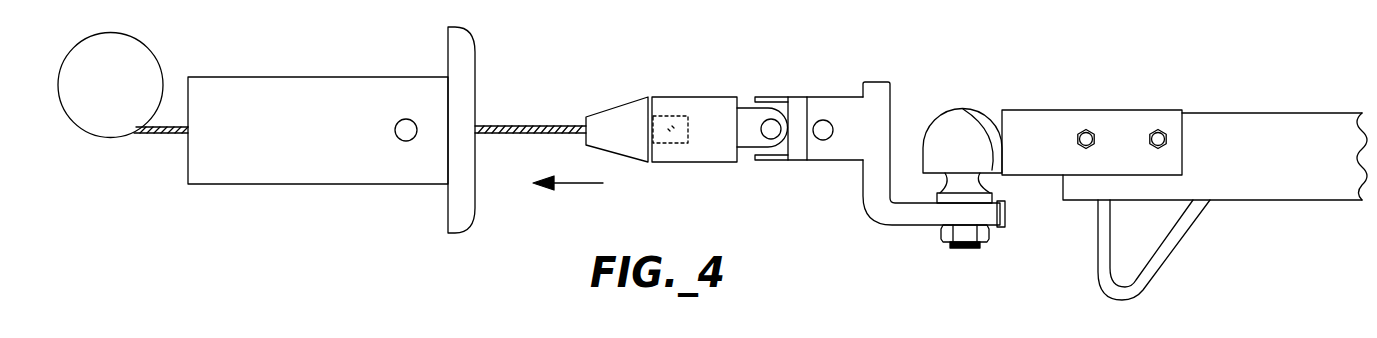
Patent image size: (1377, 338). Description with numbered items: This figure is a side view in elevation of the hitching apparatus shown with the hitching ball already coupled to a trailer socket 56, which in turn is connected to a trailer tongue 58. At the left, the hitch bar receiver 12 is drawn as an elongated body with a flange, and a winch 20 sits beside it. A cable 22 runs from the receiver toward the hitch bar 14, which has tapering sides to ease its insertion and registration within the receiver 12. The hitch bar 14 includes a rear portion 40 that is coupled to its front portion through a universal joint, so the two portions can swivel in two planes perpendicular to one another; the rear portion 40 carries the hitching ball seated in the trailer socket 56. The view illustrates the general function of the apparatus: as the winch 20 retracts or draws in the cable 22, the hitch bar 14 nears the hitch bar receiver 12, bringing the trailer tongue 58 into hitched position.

The hitch bar receiver 12 is at (298, 85).
The hitch bar 14 is at (744, 64).
The winch 20 is at (150, 67).
The cable 22 is at (512, 122).
The rear portion 40 is at (815, 100).
The trailer socket 56 is at (962, 115).
The trailer tongue 58 is at (1225, 122).